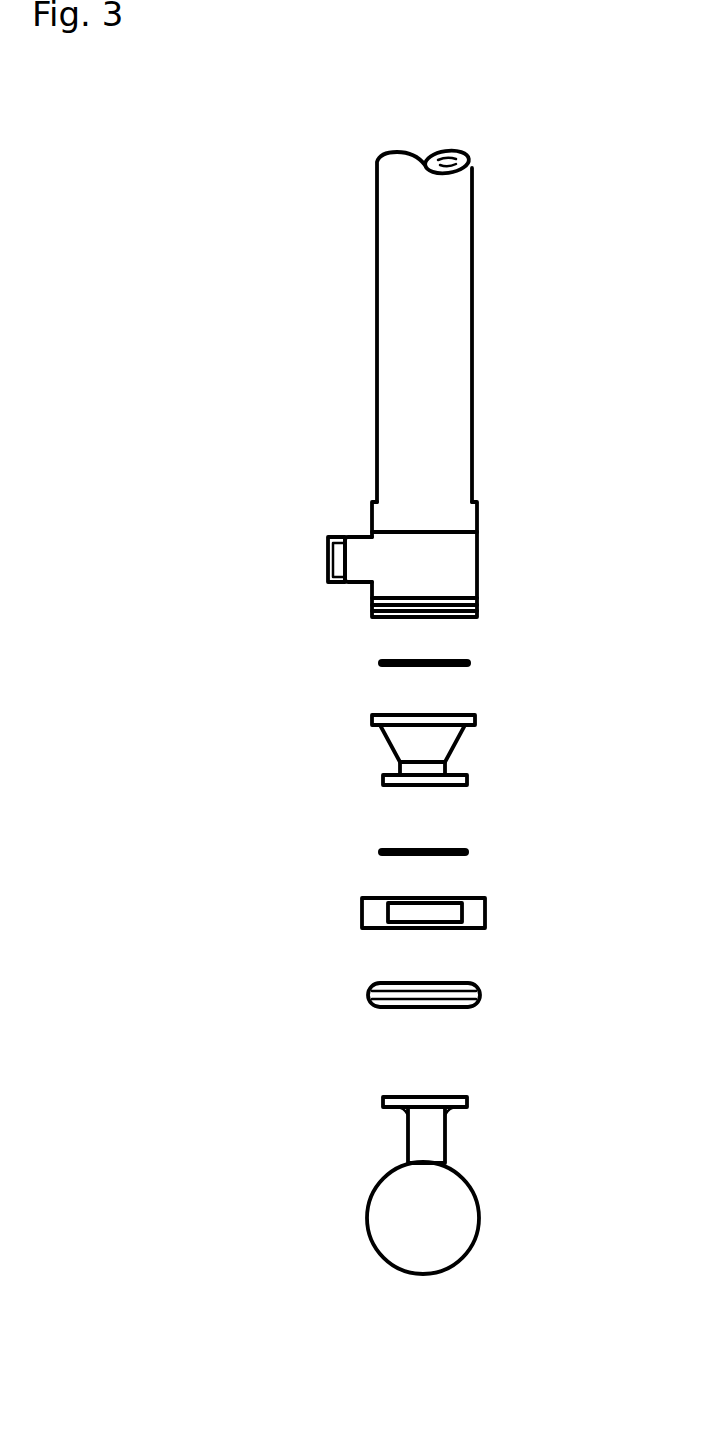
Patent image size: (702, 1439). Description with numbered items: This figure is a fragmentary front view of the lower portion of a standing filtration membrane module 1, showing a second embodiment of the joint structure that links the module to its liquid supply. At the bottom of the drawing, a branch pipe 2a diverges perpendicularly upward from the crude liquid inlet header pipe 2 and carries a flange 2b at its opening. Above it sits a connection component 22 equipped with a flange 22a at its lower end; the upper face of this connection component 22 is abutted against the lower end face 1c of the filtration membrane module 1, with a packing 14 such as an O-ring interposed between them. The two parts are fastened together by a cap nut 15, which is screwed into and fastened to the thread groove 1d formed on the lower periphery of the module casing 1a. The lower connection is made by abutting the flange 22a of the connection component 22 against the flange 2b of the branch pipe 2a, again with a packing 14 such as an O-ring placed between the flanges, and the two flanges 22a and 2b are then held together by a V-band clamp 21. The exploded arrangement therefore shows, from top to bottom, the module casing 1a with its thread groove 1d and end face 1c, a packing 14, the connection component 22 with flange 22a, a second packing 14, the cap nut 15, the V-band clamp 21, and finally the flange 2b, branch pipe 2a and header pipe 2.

The filtration membrane module 1 is at (482, 230).
The module casing 1a is at (478, 553).
The lower end face 1c is at (462, 617).
The thread groove 1d is at (370, 603).
The packing 14 is at (467, 663).
The connection component 22 is at (463, 745).
The flange 22a is at (467, 780).
The cap nut 15 is at (485, 912).
The V-band clamp 21 is at (480, 1000).
The crude liquid inlet header pipe 2 is at (367, 1240).
The branch pipe 2a is at (407, 1137).
The flange 2b is at (383, 1102).